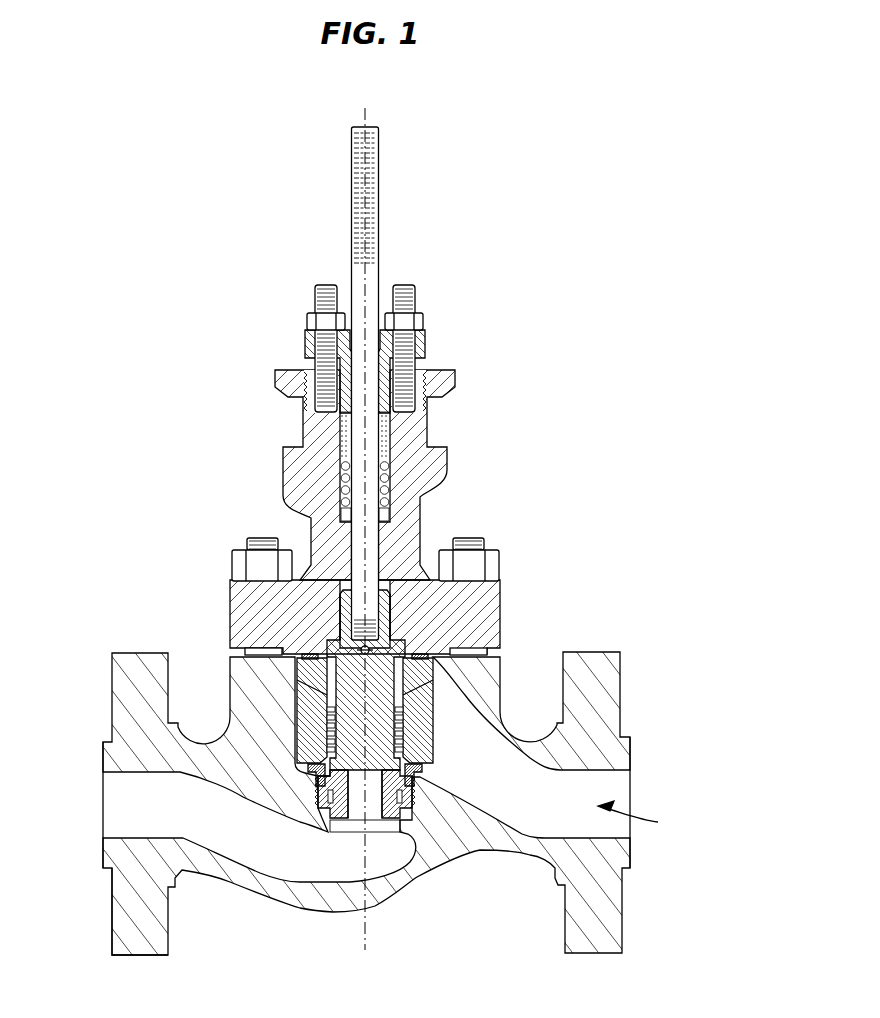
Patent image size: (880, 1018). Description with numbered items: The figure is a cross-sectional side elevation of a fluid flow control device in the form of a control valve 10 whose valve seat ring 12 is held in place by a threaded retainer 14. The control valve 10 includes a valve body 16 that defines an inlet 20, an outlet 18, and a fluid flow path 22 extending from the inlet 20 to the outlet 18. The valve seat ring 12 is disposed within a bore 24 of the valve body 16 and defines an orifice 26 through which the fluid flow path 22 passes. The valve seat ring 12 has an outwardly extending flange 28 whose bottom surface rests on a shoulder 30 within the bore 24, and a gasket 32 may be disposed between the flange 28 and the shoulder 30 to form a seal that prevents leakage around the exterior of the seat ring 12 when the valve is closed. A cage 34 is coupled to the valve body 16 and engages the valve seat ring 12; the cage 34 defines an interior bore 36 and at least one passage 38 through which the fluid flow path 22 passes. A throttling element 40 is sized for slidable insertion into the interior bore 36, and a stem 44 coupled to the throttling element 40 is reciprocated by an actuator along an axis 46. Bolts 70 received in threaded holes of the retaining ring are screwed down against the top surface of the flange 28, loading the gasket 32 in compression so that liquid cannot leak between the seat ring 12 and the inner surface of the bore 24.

The control valve 10 is at (534, 190).
The valve seat ring 12 is at (228, 715).
The threaded retainer 14 is at (320, 778).
The valve body 16 is at (120, 900).
The outlet 18 is at (640, 785).
The inlet 20 is at (103, 790).
The fluid flow path 22 is at (641, 817).
The bore 24 is at (333, 832).
The orifice 26 is at (376, 832).
The outwardly extending flange 28 is at (320, 790).
The shoulder 30 is at (330, 803).
The gasket 32 is at (378, 833).
The cage 34 is at (293, 712).
The interior bore 36 is at (400, 633).
The passage 38 is at (407, 725).
The throttling element 40 is at (348, 705).
The stem 44 is at (380, 218).
The axis 46 is at (367, 555).
The bolts 70 is at (425, 765).